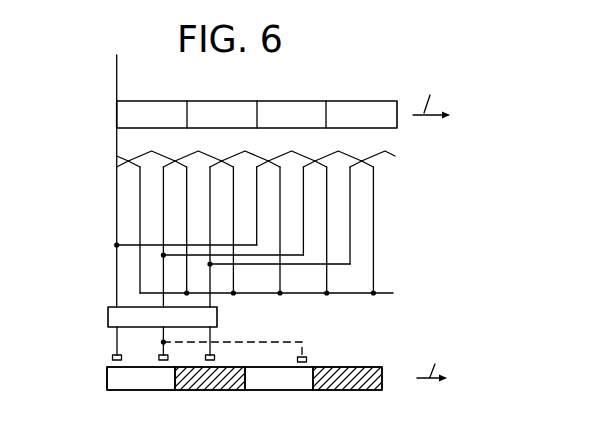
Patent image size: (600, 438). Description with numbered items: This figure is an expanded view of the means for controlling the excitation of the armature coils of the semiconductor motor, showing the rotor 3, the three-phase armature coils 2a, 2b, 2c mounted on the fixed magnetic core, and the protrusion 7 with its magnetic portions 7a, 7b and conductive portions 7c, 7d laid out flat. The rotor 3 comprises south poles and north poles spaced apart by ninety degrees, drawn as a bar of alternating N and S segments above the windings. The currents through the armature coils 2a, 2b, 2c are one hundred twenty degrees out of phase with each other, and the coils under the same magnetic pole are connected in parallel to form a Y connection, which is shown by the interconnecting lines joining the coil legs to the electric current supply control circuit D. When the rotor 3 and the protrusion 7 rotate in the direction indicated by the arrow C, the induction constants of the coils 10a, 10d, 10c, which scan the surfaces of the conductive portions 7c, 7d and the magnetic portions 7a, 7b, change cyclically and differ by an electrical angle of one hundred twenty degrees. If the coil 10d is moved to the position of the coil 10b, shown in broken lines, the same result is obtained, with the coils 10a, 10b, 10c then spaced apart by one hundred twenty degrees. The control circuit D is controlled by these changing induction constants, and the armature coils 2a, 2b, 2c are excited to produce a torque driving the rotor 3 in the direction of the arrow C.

The rotor 3 is at (318, 101).
The armature coil 2a is at (157, 149).
The armature coil 2b is at (210, 141).
The armature coil 2c is at (255, 141).
The electric current supply control circuit D is at (108, 312).
The coil 10a is at (113, 355).
The coil 10b is at (308, 357).
The coil 10c is at (210, 355).
The coil 10d is at (160, 357).
The protrusion 7 is at (107, 378).
The protrusion (magnetic portion) 7a is at (138, 389).
The protrusion (magnetic portion) 7b is at (207, 387).
The conductive portion 7c is at (277, 385).
The conductive portion 7d is at (345, 387).
The arrow (direction of rotation) C is at (432, 227).